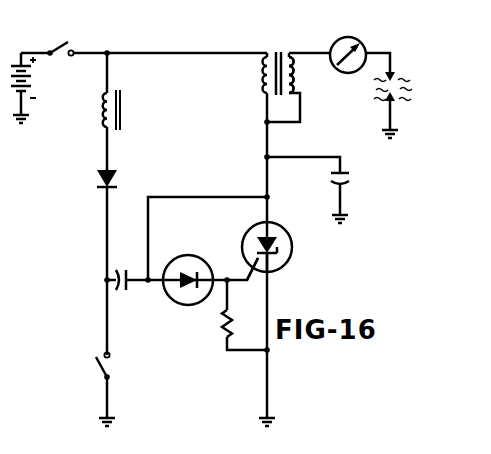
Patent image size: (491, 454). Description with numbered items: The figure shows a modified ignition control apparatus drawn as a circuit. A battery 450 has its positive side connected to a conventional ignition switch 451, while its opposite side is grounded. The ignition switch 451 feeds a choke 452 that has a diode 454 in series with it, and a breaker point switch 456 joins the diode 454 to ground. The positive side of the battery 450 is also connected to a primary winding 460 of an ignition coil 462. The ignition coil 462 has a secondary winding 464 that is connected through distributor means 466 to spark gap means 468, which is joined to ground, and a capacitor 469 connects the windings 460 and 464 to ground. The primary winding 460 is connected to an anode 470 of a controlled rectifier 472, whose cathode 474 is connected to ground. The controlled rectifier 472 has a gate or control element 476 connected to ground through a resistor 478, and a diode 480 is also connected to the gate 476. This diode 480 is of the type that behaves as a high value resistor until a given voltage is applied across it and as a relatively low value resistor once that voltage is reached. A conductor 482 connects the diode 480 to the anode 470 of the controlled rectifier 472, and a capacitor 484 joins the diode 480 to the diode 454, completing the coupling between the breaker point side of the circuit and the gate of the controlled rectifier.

The battery 450 is at (35, 82).
The ignition switch 451 is at (64, 43).
The choke 452 is at (128, 92).
The diode 454 is at (114, 168).
The breaker point switch 456 is at (108, 366).
The primary winding 460 is at (263, 79).
The ignition coil 462 is at (291, 25).
The secondary winding 464 is at (293, 80).
The distributor means 466 is at (352, 37).
The spark gap means 468 is at (378, 105).
The capacitor 469 is at (351, 178).
The anode 470 is at (284, 234).
The controlled rectifier 472 is at (294, 248).
The cathode 474 is at (279, 263).
The gate 476 is at (252, 269).
The resistor 478 is at (222, 325).
The diode 480 is at (187, 307).
The conductor 482 is at (148, 212).
The capacitor 484 is at (123, 270).